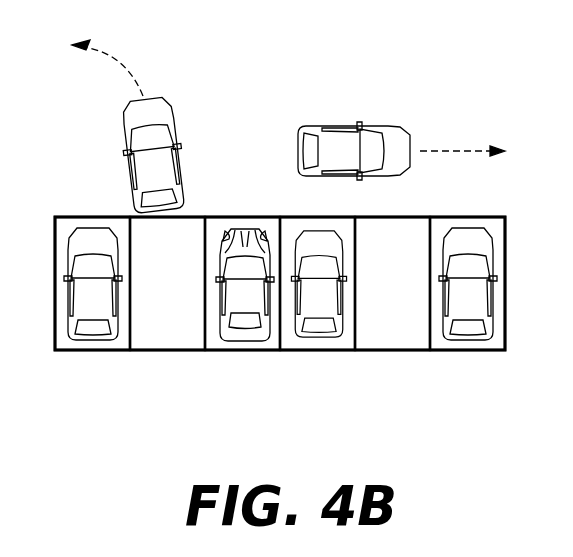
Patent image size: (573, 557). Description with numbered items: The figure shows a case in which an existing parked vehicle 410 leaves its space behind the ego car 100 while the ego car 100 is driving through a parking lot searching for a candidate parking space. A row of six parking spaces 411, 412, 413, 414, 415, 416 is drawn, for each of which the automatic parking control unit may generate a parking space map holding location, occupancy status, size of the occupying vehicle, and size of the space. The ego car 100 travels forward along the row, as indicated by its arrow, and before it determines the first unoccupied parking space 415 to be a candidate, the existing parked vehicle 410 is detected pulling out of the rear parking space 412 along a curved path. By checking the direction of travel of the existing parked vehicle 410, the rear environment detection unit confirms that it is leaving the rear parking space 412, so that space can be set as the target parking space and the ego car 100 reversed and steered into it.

The ego car 100 is at (330, 130).
The existing parked vehicle 410 is at (128, 128).
The parking space 411 is at (93, 352).
The rear parking space 412 is at (168, 352).
The parking space 413 is at (248, 352).
The parking space 414 is at (322, 352).
The first unoccupied parking space 415 is at (399, 352).
The parking space 416 is at (473, 352).